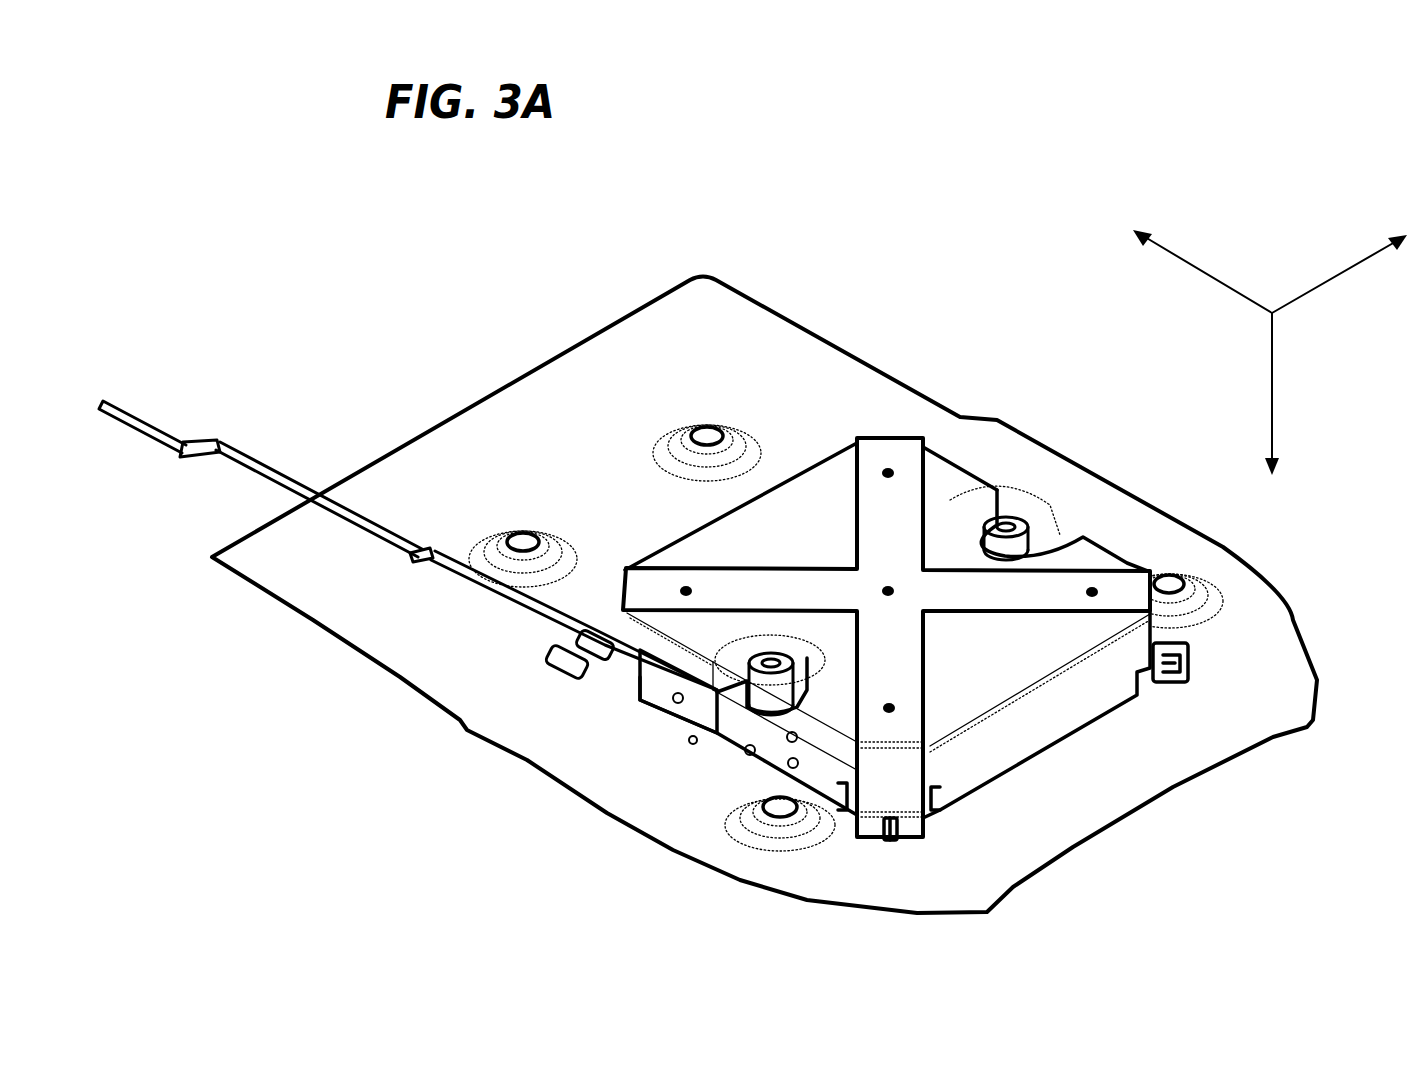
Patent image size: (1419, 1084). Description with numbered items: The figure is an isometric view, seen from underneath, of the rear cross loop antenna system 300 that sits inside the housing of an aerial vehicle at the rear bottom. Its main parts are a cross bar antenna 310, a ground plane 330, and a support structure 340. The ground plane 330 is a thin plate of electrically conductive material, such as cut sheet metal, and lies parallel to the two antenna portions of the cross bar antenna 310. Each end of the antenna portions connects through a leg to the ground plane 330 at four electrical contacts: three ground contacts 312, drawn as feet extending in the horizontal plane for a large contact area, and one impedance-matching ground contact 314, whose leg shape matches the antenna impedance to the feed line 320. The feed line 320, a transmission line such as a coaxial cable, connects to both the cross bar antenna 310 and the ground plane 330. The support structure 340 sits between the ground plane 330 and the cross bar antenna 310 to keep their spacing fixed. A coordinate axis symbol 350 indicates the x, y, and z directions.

The rear cross loop antenna system 300 is at (912, 243).
The cross bar antenna 310 is at (900, 530).
The ground contact 312 is at (1188, 682).
The impedance-matching ground contact 314 is at (698, 745).
The feed line 320 is at (545, 622).
The ground plane 330 is at (573, 428).
The support structure 340 is at (1033, 725).
The coordinate axes 350 is at (1270, 335).